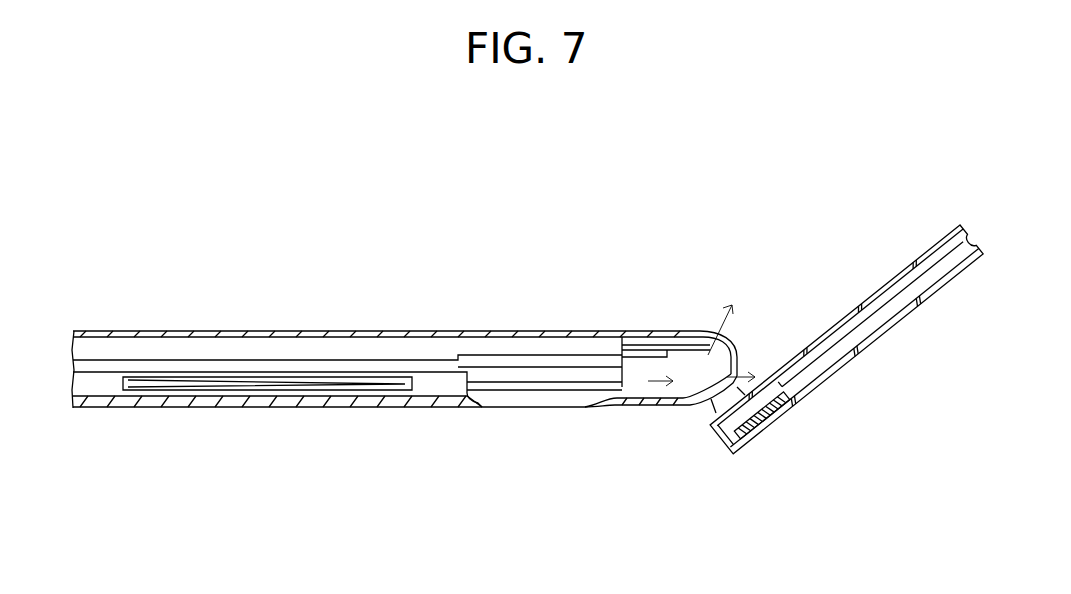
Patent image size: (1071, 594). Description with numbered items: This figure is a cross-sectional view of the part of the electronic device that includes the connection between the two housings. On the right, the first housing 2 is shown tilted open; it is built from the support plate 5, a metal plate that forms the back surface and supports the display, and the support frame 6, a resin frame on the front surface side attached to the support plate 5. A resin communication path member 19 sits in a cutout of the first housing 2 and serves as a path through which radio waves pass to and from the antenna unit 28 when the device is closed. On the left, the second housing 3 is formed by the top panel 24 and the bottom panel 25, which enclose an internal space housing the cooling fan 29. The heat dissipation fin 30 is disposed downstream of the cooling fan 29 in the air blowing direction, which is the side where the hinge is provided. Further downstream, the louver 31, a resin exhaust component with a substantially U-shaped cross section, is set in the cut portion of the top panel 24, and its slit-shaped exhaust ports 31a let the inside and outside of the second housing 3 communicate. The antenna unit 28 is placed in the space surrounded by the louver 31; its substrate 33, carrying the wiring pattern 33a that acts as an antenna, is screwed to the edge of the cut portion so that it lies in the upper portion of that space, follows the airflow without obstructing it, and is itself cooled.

The first housing 2 is at (846, 311).
The second housing 3 is at (463, 358).
The support plate 5 is at (898, 323).
The support frame 6 is at (902, 267).
The communication path member 19 is at (757, 445).
The top panel 24 is at (390, 333).
The bottom panel 25 is at (238, 405).
The antenna unit 28 is at (637, 345).
The cooling fan 29 is at (267, 378).
The heat dissipation fin 30 is at (520, 372).
The louver 31 is at (665, 405).
The exhaust port 31a is at (733, 346).
The substrate 33 is at (632, 304).
The wiring pattern 33a is at (675, 343).